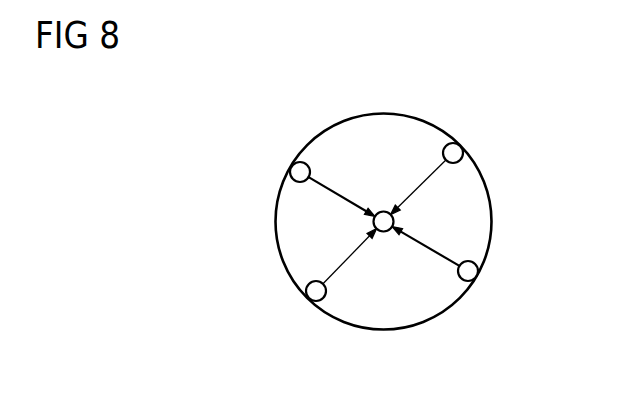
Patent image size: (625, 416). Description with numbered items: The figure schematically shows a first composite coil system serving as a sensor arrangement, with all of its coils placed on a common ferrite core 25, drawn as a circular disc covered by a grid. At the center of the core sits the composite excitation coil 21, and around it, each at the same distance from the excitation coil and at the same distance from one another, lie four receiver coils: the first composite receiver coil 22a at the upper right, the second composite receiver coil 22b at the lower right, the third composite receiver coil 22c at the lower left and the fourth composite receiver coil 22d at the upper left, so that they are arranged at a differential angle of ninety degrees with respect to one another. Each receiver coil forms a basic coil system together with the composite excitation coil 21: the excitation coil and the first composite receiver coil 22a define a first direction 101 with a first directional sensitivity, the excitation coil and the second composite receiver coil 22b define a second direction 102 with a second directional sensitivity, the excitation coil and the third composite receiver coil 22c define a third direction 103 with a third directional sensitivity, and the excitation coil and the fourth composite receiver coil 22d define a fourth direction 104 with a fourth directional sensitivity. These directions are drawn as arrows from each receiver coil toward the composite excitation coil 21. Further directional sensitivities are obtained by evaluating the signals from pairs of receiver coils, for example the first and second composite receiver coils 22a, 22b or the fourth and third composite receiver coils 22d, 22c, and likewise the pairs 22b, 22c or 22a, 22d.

The common ferrite core 25 is at (381, 126).
The composite excitation coil 21 is at (394, 222).
The first composite receiver coil 22a is at (456, 152).
The second composite receiver coil 22b is at (471, 273).
The third composite receiver coil 22c is at (313, 294).
The fourth composite receiver coil 22d is at (297, 171).
The first direction 101 is at (419, 183).
The second direction 102 is at (446, 259).
The third direction 103 is at (342, 266).
The fourth direction 104 is at (317, 181).